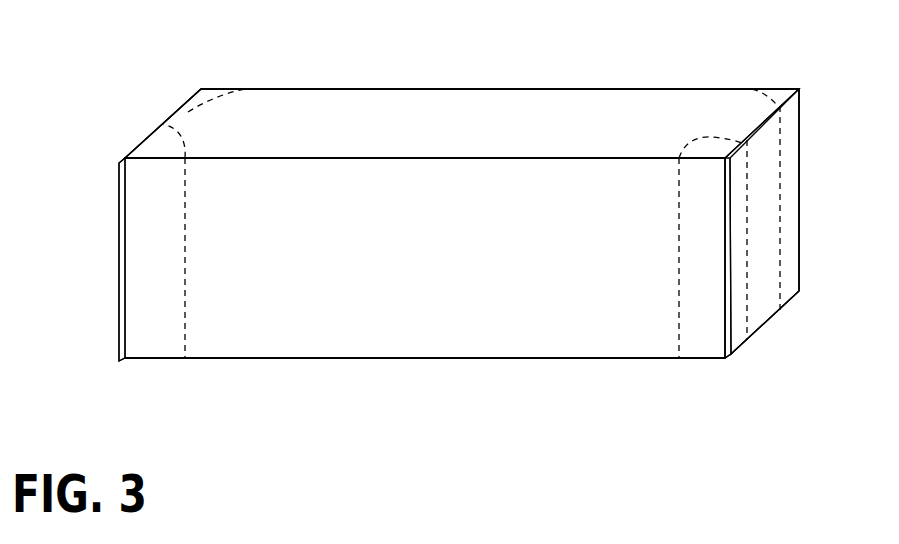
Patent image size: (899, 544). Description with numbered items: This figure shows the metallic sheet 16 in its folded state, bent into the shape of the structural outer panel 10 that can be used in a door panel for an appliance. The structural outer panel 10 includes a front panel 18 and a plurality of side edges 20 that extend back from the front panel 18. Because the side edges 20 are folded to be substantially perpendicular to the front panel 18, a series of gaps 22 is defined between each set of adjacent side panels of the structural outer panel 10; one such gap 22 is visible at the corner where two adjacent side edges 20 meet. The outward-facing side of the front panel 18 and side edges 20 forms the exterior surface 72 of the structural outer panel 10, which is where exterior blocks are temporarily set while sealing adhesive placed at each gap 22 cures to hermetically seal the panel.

The structural outer panel 10 is at (86, 121).
The metallic sheet 16 is at (704, 66).
The front panel 18 is at (448, 130).
The side edges 20 is at (351, 325).
The gaps 22 is at (728, 370).
The exterior surface 72 is at (520, 269).